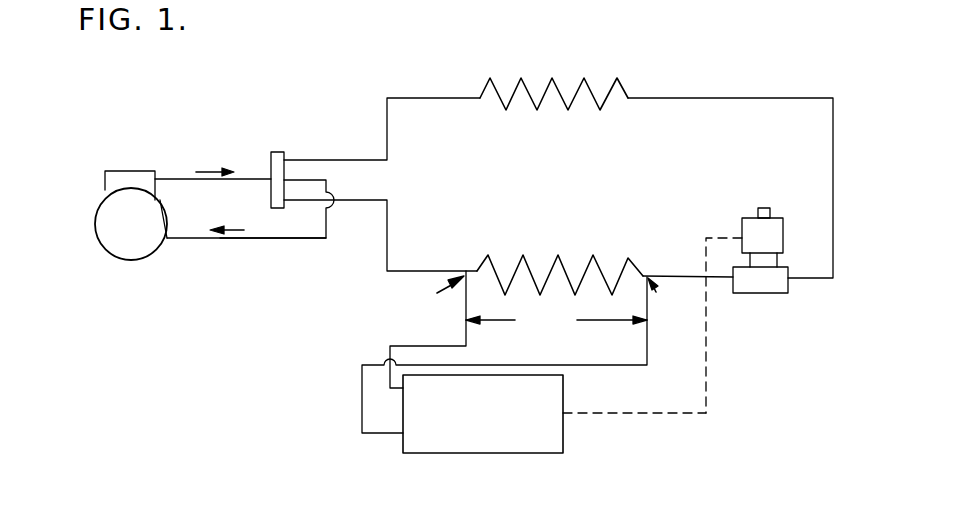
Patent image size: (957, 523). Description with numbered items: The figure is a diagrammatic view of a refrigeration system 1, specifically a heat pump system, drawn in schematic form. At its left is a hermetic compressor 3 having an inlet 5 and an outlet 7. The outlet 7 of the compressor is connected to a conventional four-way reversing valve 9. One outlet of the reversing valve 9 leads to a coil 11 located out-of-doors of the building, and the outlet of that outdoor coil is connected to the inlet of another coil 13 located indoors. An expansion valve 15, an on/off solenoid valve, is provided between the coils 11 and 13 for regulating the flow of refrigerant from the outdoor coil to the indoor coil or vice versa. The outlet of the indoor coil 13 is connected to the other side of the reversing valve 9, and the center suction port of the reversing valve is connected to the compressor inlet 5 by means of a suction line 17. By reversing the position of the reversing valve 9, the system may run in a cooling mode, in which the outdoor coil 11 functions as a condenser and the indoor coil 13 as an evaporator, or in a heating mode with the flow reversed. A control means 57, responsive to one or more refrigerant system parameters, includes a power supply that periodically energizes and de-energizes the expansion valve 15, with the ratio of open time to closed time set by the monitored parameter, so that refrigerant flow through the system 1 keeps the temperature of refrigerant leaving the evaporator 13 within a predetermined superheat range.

The refrigeration system 1 is at (302, 50).
The hermetic compressor 3 is at (82, 230).
The inlet 5 is at (166, 238).
The outlet 7 is at (155, 172).
The reversing valve 9 is at (281, 142).
The outdoor coil 11 is at (624, 66).
The indoor coil 13 is at (604, 246).
The expansion valve 15 is at (794, 306).
The suction line 17 is at (296, 240).
The control means 57 is at (548, 466).